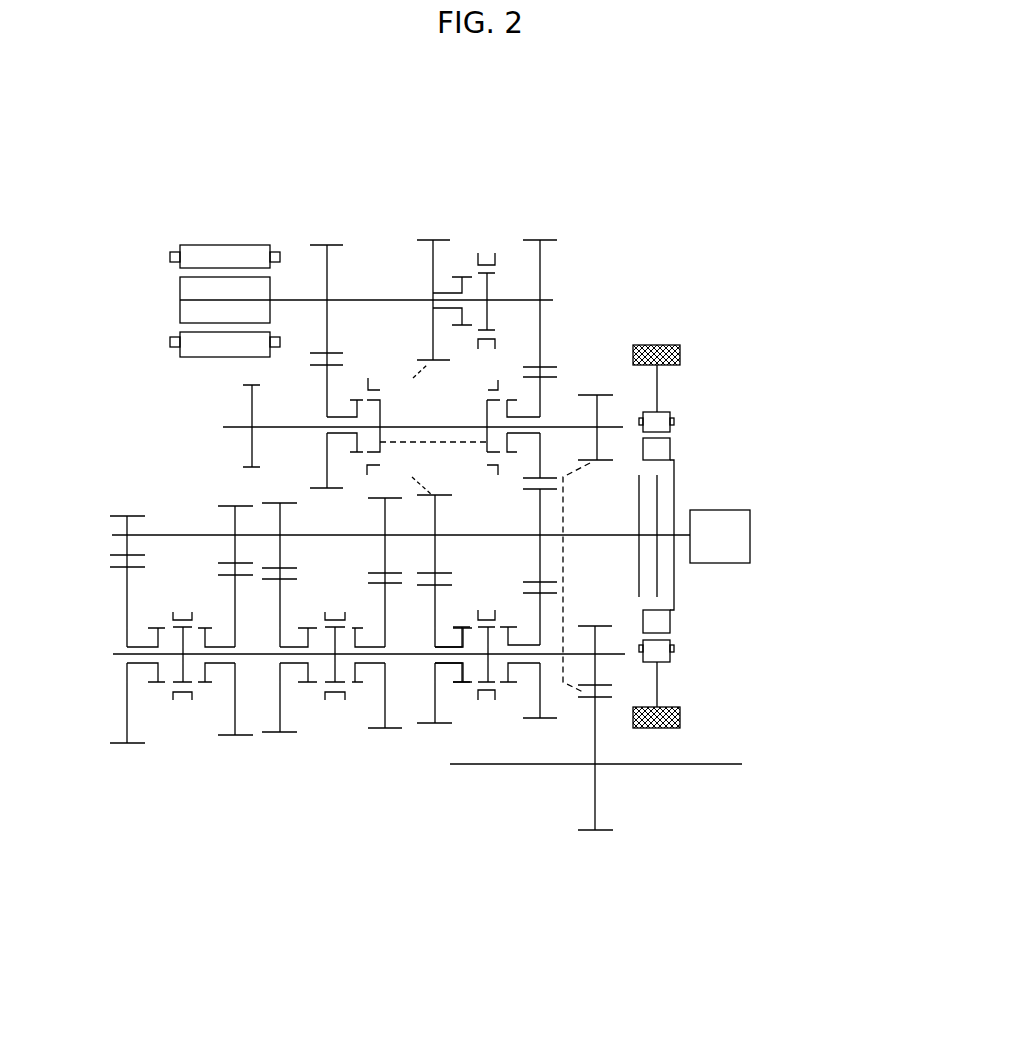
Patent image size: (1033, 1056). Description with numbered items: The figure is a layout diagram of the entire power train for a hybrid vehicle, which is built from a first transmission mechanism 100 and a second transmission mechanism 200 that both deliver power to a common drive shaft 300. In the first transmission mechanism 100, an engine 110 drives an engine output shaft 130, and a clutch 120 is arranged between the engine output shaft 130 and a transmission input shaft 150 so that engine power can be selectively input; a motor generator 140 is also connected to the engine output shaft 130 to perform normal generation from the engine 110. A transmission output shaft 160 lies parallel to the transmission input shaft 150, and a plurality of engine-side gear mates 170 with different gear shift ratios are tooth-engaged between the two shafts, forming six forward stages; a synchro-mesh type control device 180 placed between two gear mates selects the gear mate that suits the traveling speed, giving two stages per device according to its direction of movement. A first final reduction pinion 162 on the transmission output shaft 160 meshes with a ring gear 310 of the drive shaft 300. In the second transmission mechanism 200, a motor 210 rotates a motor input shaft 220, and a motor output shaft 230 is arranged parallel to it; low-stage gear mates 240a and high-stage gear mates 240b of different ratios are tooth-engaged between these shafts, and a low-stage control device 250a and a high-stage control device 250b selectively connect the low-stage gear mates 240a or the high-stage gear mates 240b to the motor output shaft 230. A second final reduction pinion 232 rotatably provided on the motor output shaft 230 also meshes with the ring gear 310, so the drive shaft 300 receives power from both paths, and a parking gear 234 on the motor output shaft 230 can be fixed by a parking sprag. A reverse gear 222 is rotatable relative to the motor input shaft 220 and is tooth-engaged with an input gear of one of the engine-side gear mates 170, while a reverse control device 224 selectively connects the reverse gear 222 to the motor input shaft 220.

The first transmission mechanism 100 is at (735, 596).
The engine 110 is at (750, 535).
The clutch 120 is at (658, 482).
The engine output shaft 130 is at (678, 533).
The motor generator 140 is at (670, 448).
The transmission input shaft 150 is at (177, 535).
The transmission output shaft 160 is at (257, 654).
The first final reduction pinion 162 is at (597, 670).
The engine-side gear mates 170 is at (385, 683).
The control device 180 is at (182, 700).
The second transmission mechanism 200 is at (703, 325).
The motor 210 is at (180, 284).
The motor input shaft 220 is at (291, 300).
The reverse gear 222 is at (433, 273).
The reverse control device 224 is at (488, 255).
The motor output shaft 230 is at (288, 427).
The second final reduction pinion 232 is at (597, 410).
The parking gear 234 is at (252, 413).
The low-stage gear mates 240a is at (327, 390).
The high-stage gear mates 240b is at (540, 393).
The low-stage control device 250a is at (375, 382).
The high-stage control device 250b is at (503, 390).
The drive shaft 300 is at (742, 764).
The ring gear 310 is at (597, 808).